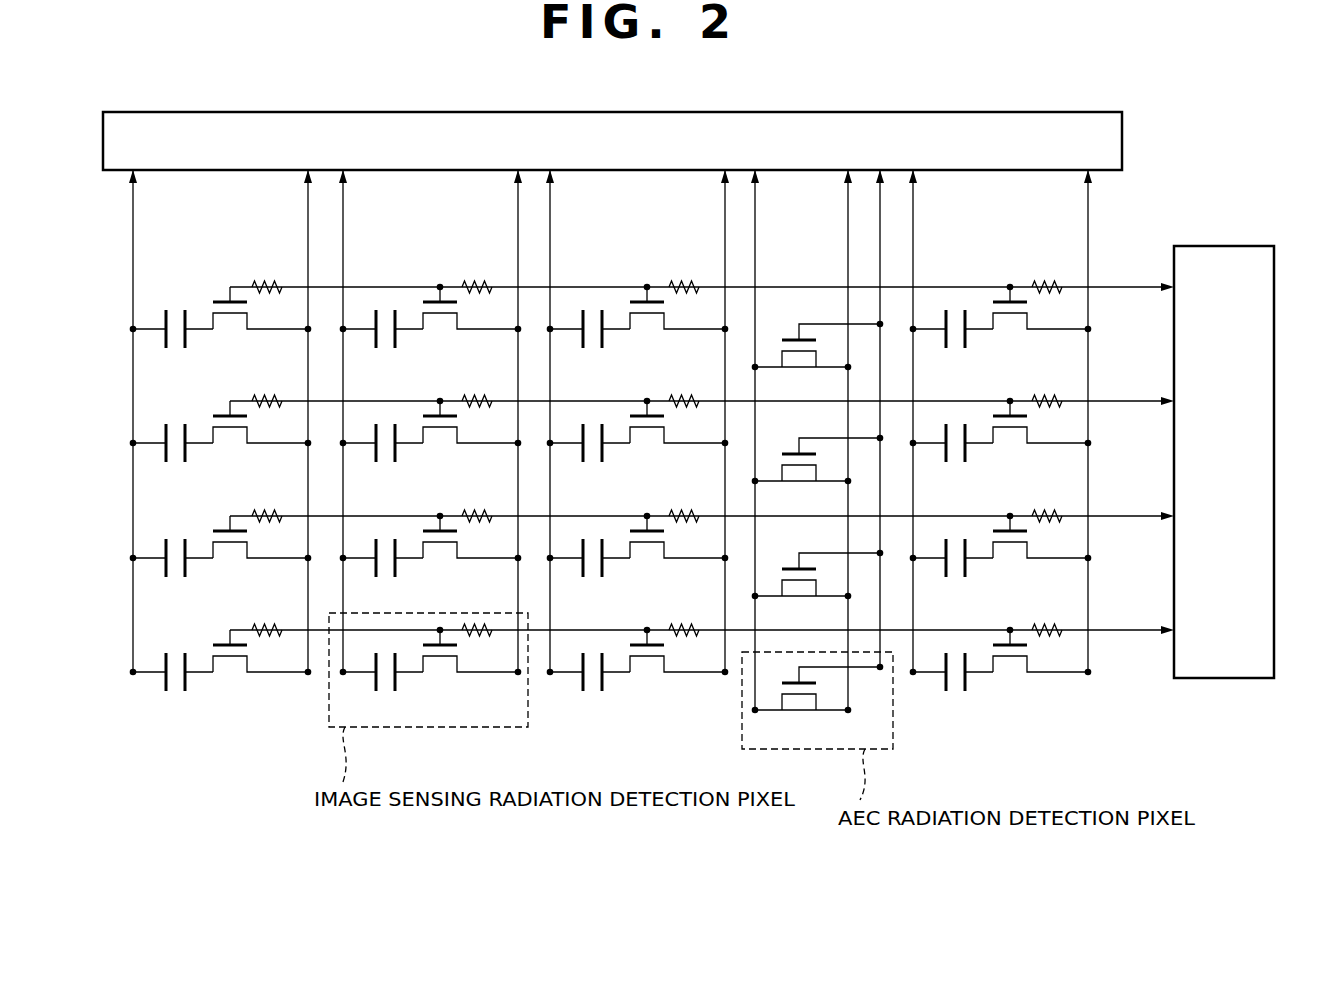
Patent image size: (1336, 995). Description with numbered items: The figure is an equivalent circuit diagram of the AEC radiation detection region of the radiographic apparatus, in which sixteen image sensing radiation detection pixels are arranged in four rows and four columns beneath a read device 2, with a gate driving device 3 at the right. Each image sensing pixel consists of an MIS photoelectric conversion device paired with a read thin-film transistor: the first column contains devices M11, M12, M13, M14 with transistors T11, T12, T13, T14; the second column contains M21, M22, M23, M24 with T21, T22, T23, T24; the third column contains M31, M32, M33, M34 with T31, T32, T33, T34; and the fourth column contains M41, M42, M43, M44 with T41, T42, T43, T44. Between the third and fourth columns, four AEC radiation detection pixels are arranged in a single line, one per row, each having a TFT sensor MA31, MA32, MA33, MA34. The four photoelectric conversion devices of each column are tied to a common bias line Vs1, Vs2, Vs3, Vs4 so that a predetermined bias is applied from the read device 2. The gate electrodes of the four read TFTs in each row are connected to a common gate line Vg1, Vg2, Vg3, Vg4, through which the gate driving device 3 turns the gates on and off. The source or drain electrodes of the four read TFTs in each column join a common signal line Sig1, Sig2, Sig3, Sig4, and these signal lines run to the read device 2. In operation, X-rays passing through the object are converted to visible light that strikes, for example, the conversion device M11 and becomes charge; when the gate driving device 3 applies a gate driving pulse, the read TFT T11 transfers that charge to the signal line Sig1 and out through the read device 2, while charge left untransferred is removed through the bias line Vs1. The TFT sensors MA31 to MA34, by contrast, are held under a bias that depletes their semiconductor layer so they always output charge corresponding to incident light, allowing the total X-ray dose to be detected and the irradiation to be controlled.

The read device 2 is at (214, 112).
The gate driving device 3 is at (1221, 246).
The common bias line Vs1 is at (151, 421).
The common bias line Vs2 is at (362, 421).
The common bias line Vs3 is at (569, 421).
The common bias line Vs4 is at (932, 421).
The signal line Sig1 is at (287, 421).
The signal line Sig2 is at (496, 421).
The signal line Sig3 is at (703, 421).
The signal line Sig4 is at (1066, 421).
The common gate line Vg1 is at (702, 300).
The common gate line Vg2 is at (702, 414).
The common gate line Vg3 is at (702, 529).
The common gate line Vg4 is at (702, 643).
The MIS photoelectric conversion device M11 is at (171, 344).
The MIS photoelectric conversion device M12 is at (171, 458).
The MIS photoelectric conversion device M13 is at (171, 573).
The MIS photoelectric conversion device M14 is at (171, 687).
The MIS photoelectric conversion device M21 is at (381, 344).
The MIS photoelectric conversion device M22 is at (381, 458).
The MIS photoelectric conversion device M23 is at (381, 573).
The MIS photoelectric conversion device M24 is at (381, 687).
The MIS photoelectric conversion device M31 is at (588, 344).
The MIS photoelectric conversion device M32 is at (588, 458).
The MIS photoelectric conversion device M33 is at (588, 573).
The MIS photoelectric conversion device M34 is at (588, 687).
The MIS photoelectric conversion device M41 is at (951, 344).
The MIS photoelectric conversion device M42 is at (951, 458).
The MIS photoelectric conversion device M43 is at (951, 573).
The MIS photoelectric conversion device M44 is at (951, 687).
The read TFT T11 is at (262, 321).
The read TFT T12 is at (262, 435).
The read TFT T13 is at (262, 550).
The read TFT T14 is at (262, 664).
The read TFT T21 is at (472, 321).
The read TFT T22 is at (472, 435).
The read TFT T23 is at (472, 550).
The read TFT T24 is at (472, 664).
The read TFT T31 is at (679, 321).
The read TFT T32 is at (679, 435).
The read TFT T33 is at (679, 550).
The read TFT T34 is at (679, 664).
The read TFT T41 is at (1042, 321).
The read TFT T42 is at (1042, 435).
The read TFT T43 is at (1042, 550).
The read TFT T44 is at (1042, 664).
The TFT sensor MA31 is at (818, 361).
The TFT sensor MA32 is at (818, 475).
The TFT sensor MA33 is at (818, 590).
The TFT sensor MA34 is at (818, 702).